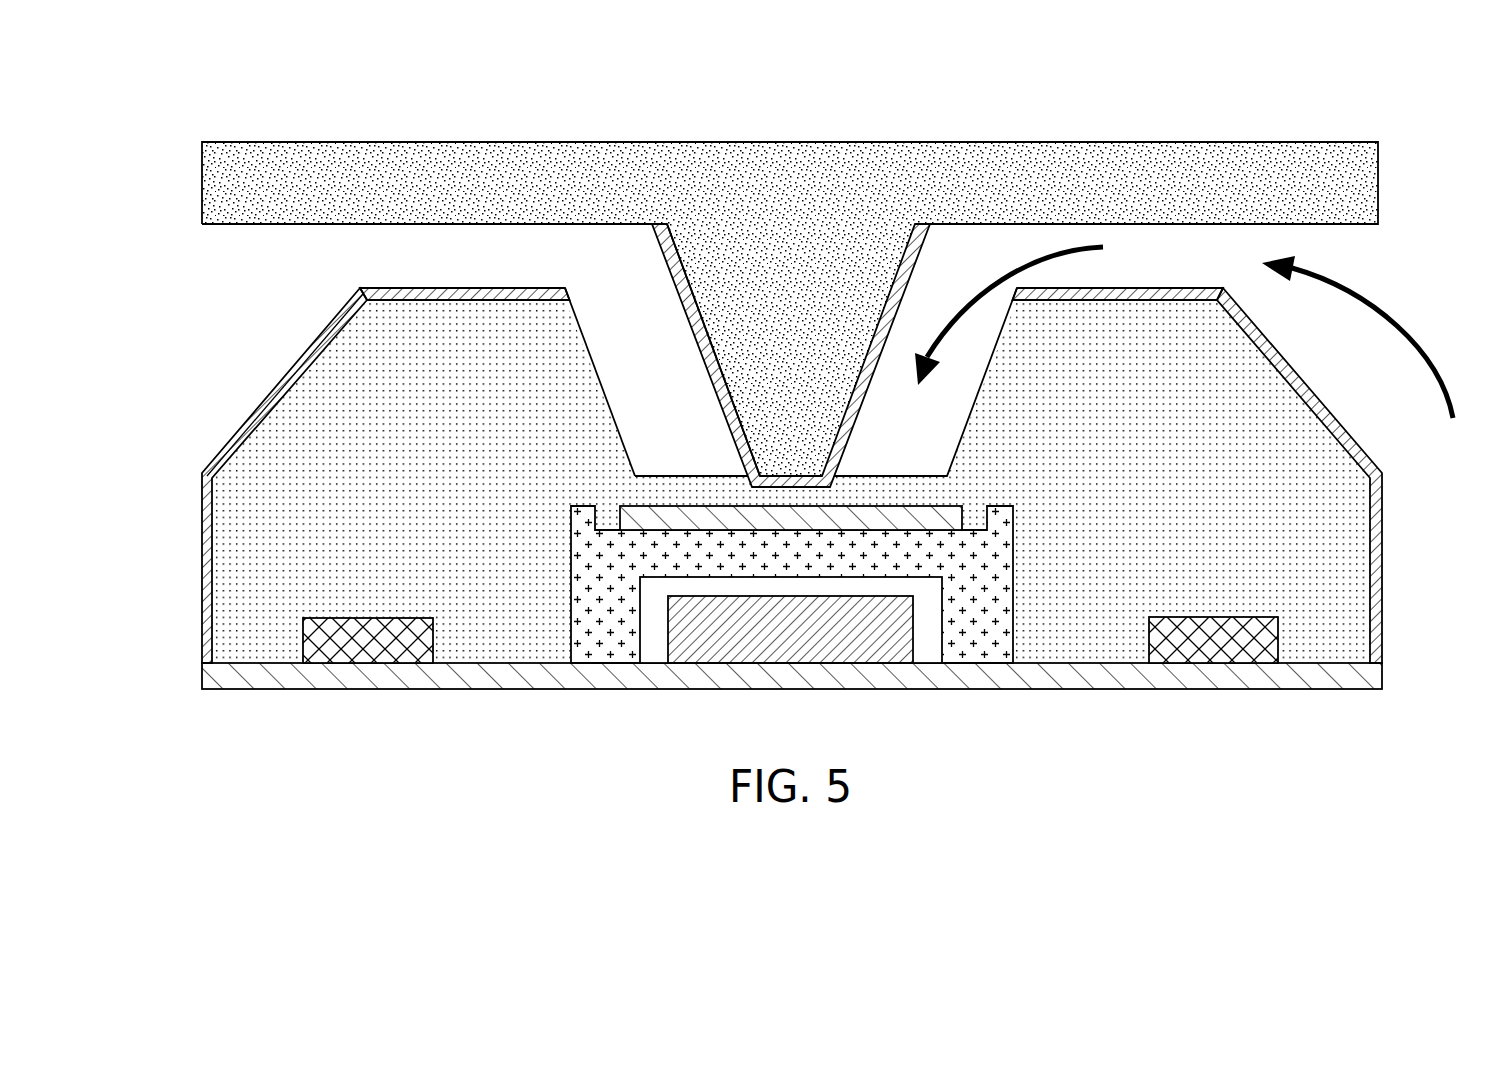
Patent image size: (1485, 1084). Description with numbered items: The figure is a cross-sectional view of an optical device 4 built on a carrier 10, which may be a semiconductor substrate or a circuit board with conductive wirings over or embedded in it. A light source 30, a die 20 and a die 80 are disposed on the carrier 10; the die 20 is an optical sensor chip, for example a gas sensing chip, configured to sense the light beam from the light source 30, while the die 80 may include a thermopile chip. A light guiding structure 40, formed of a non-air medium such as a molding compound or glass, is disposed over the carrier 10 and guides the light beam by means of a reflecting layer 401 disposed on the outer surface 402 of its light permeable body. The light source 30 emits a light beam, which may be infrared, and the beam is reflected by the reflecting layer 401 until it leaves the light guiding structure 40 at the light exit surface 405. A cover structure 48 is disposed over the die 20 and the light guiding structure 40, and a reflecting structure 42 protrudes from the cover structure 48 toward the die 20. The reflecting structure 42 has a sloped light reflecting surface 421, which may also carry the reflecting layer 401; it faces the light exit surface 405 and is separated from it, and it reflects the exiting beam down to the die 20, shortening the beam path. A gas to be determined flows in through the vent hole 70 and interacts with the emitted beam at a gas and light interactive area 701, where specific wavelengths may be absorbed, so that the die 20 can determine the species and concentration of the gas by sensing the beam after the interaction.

The optical device 4 is at (151, 109).
The cover structure 48 is at (212, 183).
The reflecting structure 42 is at (720, 288).
The light reflecting surface 421 is at (690, 317).
The vent hole 70 is at (590, 288).
The gas and light interactive area 701 is at (952, 263).
The reflecting layer 401 is at (707, 353).
The light exit surface 405 is at (616, 422).
The light guiding structure 40 is at (248, 510).
The outer surface 402 is at (1372, 610).
The carrier 10 is at (214, 676).
The die 20 is at (628, 518).
The die 80 is at (791, 649).
The light source 30 is at (1212, 650).